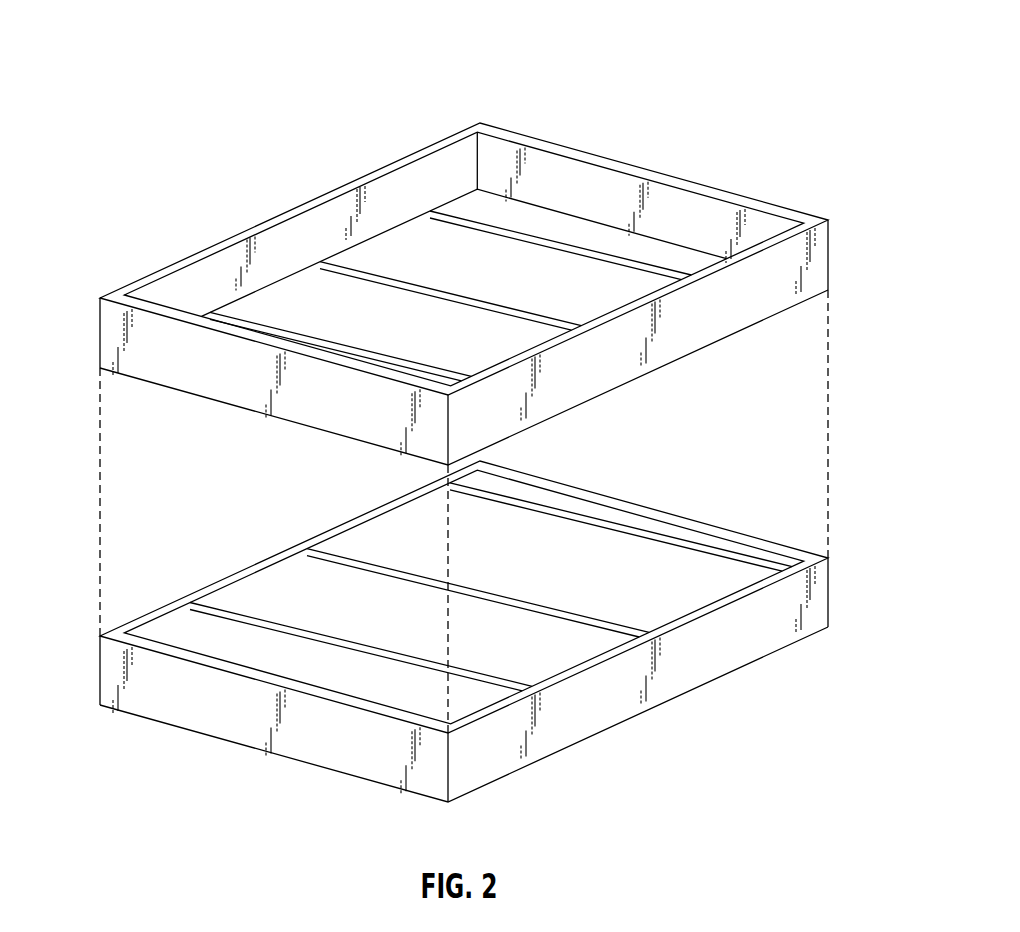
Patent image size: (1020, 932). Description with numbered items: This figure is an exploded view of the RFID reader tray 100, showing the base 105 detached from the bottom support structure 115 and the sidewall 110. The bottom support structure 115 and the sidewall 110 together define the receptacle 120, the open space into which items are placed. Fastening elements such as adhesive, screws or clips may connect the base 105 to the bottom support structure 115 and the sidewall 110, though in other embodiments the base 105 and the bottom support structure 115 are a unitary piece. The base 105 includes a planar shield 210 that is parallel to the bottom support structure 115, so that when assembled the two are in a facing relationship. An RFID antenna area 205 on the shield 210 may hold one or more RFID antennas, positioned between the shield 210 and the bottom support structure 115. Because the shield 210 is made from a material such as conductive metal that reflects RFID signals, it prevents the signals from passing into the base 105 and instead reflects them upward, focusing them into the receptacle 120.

The container assembly 100 is at (130, 126).
The base 105 is at (830, 600).
The sidewall 110 is at (830, 236).
The bottom support structure 115 is at (563, 230).
The receptacle 120 is at (406, 240).
The RFID antenna area 205 is at (677, 523).
The shield 210 is at (812, 551).